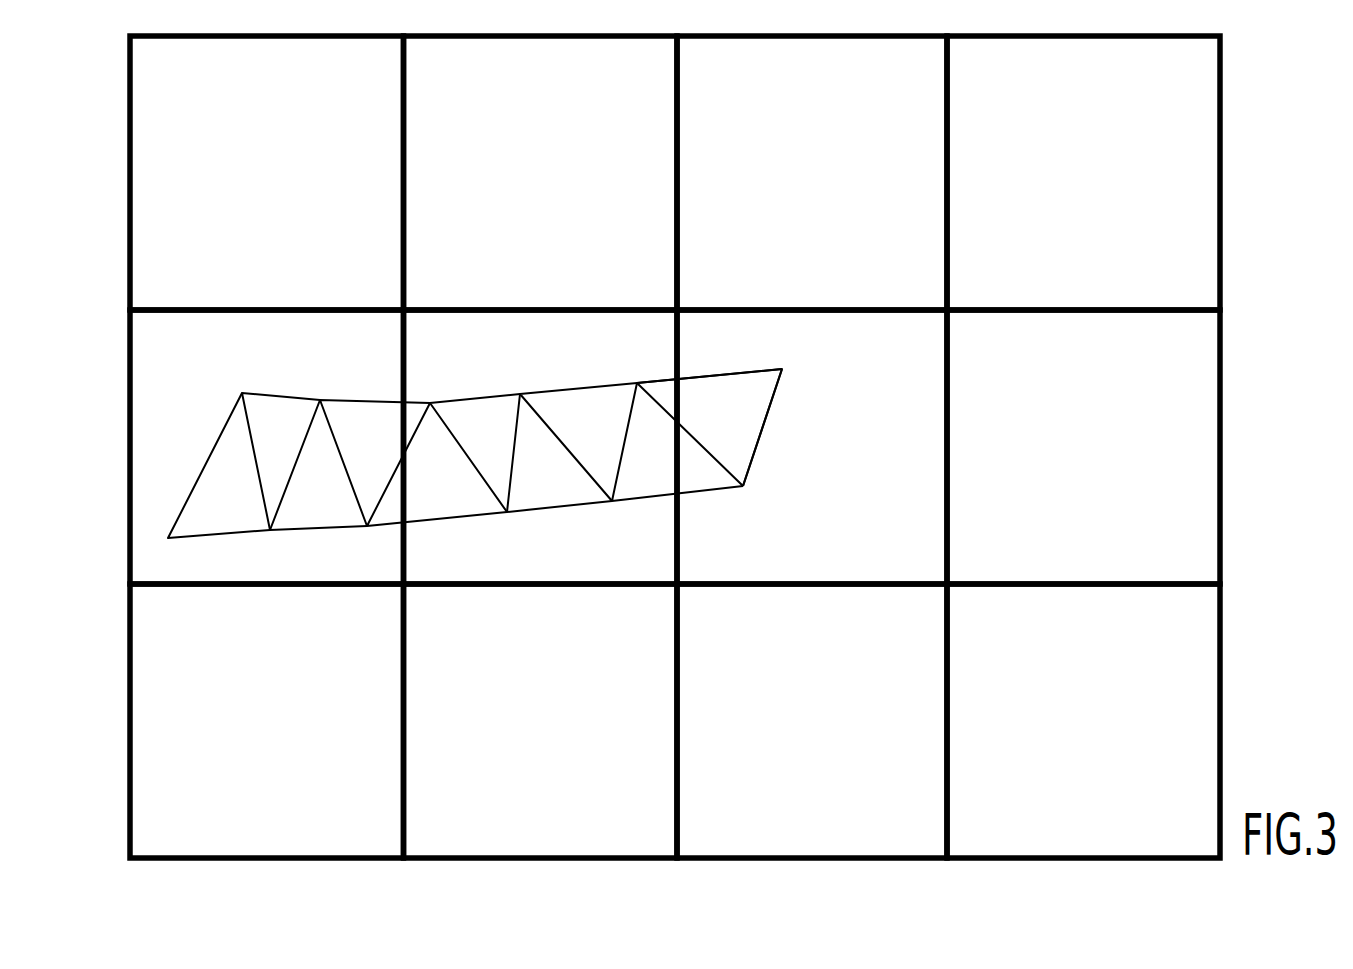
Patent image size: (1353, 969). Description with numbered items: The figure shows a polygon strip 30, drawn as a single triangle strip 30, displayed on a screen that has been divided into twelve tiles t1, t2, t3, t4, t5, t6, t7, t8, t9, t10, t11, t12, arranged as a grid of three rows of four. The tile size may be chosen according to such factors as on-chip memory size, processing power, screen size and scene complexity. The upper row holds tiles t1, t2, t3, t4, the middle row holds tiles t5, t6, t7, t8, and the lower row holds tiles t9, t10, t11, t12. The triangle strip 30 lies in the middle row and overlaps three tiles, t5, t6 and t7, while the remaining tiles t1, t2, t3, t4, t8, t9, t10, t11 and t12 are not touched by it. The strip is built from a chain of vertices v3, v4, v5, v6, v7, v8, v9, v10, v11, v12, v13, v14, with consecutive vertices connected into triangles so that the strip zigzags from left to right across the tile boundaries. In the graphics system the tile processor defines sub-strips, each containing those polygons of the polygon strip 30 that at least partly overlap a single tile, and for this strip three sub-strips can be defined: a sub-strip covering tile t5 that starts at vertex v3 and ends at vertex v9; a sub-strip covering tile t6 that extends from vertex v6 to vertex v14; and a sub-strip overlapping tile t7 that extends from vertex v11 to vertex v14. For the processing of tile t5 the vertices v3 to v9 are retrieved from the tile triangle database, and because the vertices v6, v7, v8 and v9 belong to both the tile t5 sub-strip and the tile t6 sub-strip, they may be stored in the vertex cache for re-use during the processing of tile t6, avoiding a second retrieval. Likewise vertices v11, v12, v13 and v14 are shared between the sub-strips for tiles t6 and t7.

The polygon strip 30 is at (438, 459).
The tile t1 is at (267, 173).
The tile t2 is at (541, 173).
The tile t3 is at (812, 173).
The tile t4 is at (1083, 173).
The tile t5 is at (267, 447).
The tile t6 is at (541, 447).
The tile t7 is at (812, 447).
The tile t8 is at (1083, 447).
The tile t9 is at (267, 721).
The tile t10 is at (541, 721).
The tile t11 is at (812, 721).
The tile t12 is at (1083, 721).
The vertex v3 is at (214, 483).
The vertex v4 is at (279, 449).
The vertex v5 is at (315, 481).
The vertex v6 is at (373, 447).
The vertex v7 is at (430, 482).
The vertex v8 is at (475, 445).
The vertex v9 is at (557, 473).
The vertex v10 is at (568, 434).
The vertex v11 is at (674, 461).
The vertex v12 is at (698, 421).
The vertex v13 is at (765, 443).
The vertex v14 is at (728, 416).